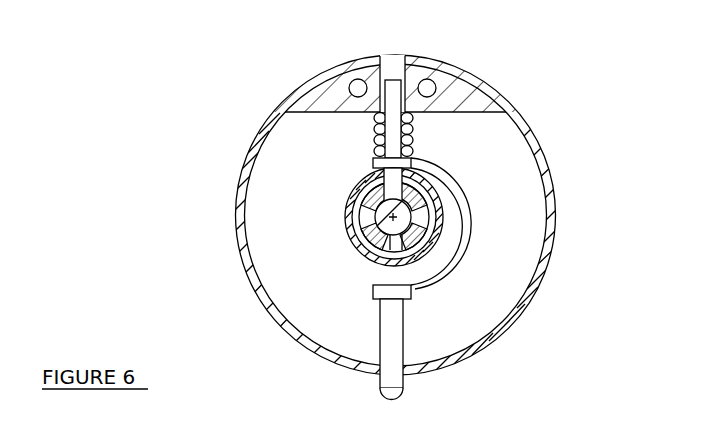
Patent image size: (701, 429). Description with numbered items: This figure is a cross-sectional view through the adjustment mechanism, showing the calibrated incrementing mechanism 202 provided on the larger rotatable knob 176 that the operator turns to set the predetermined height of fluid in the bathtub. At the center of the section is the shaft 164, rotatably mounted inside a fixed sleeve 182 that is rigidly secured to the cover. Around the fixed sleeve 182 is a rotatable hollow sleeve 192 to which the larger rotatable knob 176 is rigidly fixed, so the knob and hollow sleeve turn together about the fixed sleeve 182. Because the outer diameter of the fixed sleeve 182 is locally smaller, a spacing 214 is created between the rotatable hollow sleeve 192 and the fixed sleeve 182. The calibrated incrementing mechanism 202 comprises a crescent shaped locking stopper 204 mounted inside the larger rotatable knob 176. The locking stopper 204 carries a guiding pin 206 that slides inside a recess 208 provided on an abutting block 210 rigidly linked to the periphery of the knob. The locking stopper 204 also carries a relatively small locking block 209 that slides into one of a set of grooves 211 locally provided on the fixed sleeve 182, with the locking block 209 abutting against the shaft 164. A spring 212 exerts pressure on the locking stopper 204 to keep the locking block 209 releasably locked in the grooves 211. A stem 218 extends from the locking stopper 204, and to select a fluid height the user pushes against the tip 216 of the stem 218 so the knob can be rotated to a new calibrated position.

The calibrated incrementing mechanism 202 is at (210, 175).
The larger rotatable knob 176 is at (538, 290).
The abutting block 210 is at (461, 108).
The recess 208 is at (394, 62).
The spring 212 is at (377, 138).
The guiding pin 206 is at (390, 88).
The locking stopper 204 is at (415, 293).
The spacing 214 is at (367, 247).
The grooves 211 is at (360, 220).
The fixed sleeve 182 is at (411, 193).
The rotatable hollow sleeve 192 is at (428, 239).
The locking block 209 is at (386, 185).
The shaft 164 is at (380, 209).
The stem 218 is at (388, 338).
The tip 216 is at (397, 383).